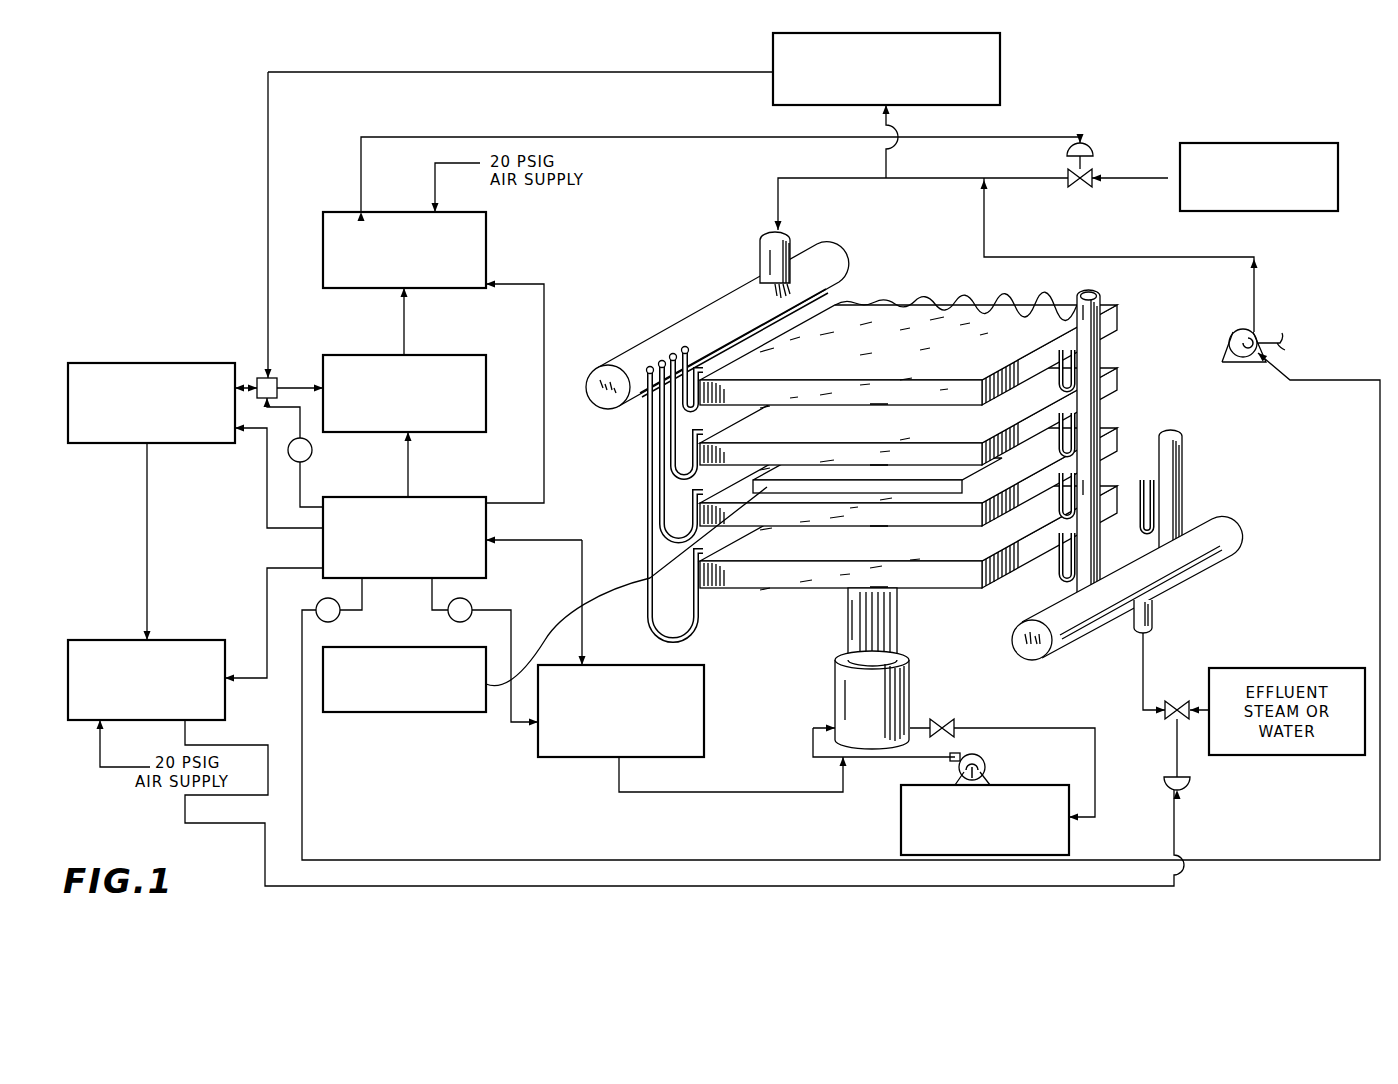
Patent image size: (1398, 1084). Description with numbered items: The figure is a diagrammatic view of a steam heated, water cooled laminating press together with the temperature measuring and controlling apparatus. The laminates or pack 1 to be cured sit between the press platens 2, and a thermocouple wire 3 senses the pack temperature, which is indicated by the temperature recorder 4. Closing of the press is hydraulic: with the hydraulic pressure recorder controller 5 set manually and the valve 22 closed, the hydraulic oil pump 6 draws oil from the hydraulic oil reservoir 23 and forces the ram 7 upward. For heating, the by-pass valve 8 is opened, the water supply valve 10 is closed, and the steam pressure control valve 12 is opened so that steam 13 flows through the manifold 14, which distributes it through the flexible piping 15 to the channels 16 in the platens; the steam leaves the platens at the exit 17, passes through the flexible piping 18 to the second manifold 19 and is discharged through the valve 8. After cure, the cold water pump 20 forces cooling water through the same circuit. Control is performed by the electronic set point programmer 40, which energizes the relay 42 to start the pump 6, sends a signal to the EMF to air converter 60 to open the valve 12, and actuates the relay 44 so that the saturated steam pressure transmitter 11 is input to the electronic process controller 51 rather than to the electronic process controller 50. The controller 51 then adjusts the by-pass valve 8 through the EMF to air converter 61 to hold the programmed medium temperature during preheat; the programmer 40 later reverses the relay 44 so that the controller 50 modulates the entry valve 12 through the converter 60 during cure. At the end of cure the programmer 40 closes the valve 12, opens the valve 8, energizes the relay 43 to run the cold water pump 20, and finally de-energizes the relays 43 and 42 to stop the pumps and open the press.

The pack 1 is at (864, 490).
The press platens 2 is at (801, 495).
The thermocouple wire 3 is at (645, 580).
The temperature recorder 4 is at (428, 713).
The hydraulic pressure recorder controller 5 is at (706, 681).
The hydraulic oil pump 6 is at (986, 760).
The ram 7 is at (846, 620).
The by-pass valve 8 is at (1188, 786).
The water supply valve 10 is at (1016, 218).
The pressure transmitter 11 is at (1000, 65).
The steam pressure control valve 12 is at (1090, 150).
The steam 13 is at (1286, 143).
The manifold 14 is at (706, 308).
The flexible piping 15 is at (668, 424).
The channels 16 is at (918, 323).
The platen exit 17 is at (1064, 350).
The flexible piping 18 is at (1061, 570).
The second manifold 19 is at (1185, 570).
The cold water pump 20 is at (1232, 335).
The valve 22 is at (947, 722).
The hydraulic oil reservoir 23 is at (1030, 785).
The electronic set point programmer 40 is at (487, 531).
The relay 42 is at (474, 604).
The relay 43 is at (341, 617).
The relay 44 is at (312, 452).
The electronic process controller 50 is at (487, 406).
The electronic process controller 51 is at (176, 362).
The EMF to air converter 60 is at (487, 242).
The EMF to air converter 61 is at (161, 640).